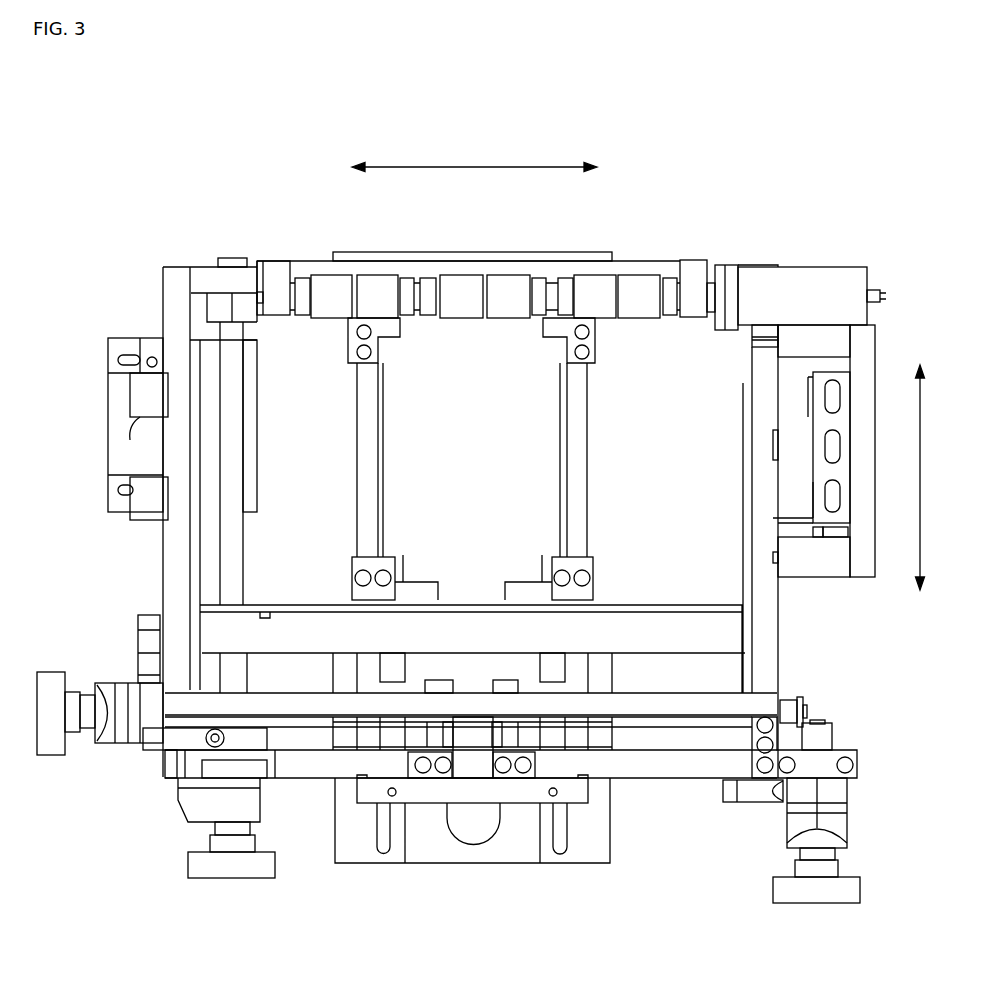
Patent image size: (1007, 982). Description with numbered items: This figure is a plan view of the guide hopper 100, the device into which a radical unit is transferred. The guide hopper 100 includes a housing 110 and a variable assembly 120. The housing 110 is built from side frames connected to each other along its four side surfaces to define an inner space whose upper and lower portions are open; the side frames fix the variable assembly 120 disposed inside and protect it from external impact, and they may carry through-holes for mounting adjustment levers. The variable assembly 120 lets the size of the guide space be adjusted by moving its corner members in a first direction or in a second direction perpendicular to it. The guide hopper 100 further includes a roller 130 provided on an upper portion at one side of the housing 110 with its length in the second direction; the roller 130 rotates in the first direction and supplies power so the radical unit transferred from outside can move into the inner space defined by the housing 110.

The guide hopper 100 is at (155, 129).
The housing 110 is at (158, 575).
The variable assembly 120 is at (595, 461).
The roller 130 is at (512, 277).